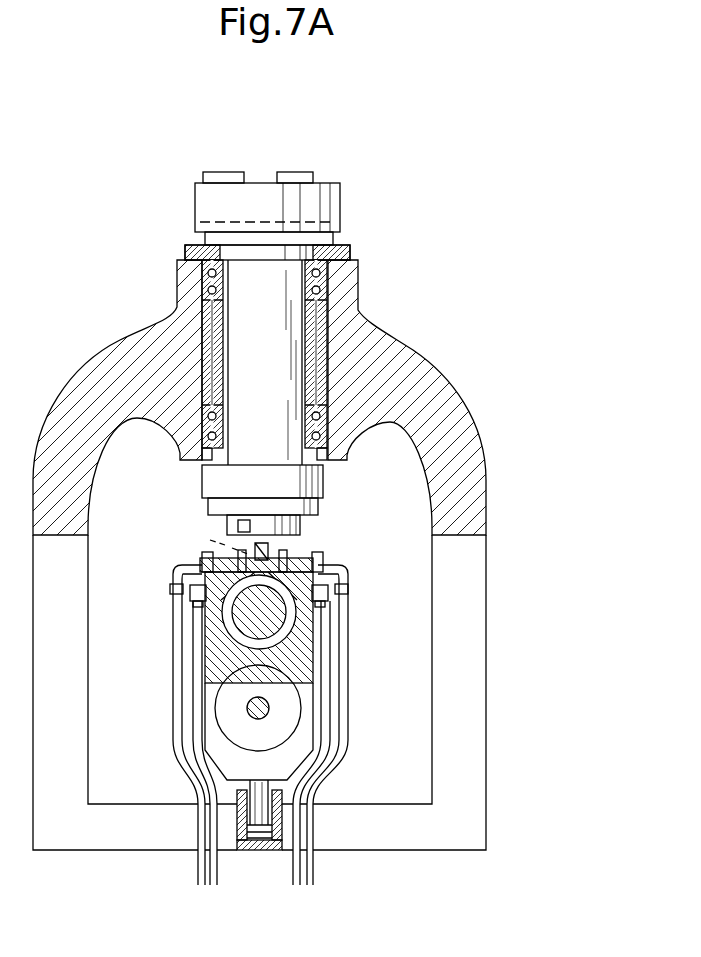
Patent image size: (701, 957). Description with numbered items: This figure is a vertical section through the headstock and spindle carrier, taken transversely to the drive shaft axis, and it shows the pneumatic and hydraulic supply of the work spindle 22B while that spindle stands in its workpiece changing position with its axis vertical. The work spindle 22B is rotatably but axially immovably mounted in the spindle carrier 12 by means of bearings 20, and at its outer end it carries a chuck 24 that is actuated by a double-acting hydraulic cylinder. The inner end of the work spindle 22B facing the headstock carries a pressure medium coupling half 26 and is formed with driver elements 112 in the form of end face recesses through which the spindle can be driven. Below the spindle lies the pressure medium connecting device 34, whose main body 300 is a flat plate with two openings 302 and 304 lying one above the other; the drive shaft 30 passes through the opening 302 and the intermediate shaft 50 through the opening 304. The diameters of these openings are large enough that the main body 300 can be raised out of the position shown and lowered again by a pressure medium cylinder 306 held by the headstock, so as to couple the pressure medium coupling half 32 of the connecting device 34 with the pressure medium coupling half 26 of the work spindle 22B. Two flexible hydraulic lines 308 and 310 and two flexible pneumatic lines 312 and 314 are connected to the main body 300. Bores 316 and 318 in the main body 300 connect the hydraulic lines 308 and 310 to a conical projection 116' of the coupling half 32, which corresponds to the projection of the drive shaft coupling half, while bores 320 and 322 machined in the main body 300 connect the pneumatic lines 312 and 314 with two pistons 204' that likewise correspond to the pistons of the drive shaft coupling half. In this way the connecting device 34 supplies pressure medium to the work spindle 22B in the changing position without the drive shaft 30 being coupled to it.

The spindle carrier 12 is at (410, 340).
The chuck 24 is at (343, 206).
The bearings 20 is at (325, 292).
The work spindle 22B is at (290, 327).
The conical projection 116' is at (286, 504).
The pressure medium coupling half 26 is at (306, 530).
The pressure medium coupling half 32 is at (281, 547).
The driver elements 112 is at (225, 535).
The pistons 204' is at (262, 548).
The bore 320 is at (203, 562).
The bore 322 is at (325, 560).
The bore 318 is at (190, 592).
The bore 316 is at (336, 588).
The flexible pneumatic line 314 is at (172, 702).
The flexible hydraulic line 310 is at (193, 633).
The flexible pneumatic line 312 is at (347, 683).
The flexible hydraulic line 308 is at (322, 730).
The main body 300 is at (330, 658).
The opening 302 is at (300, 633).
The drive shaft 30 is at (240, 625).
The pressure medium connecting device 34 is at (303, 772).
The opening 304 is at (298, 718).
The intermediate shaft 50 is at (250, 710).
The pressure medium cylinder 306 is at (262, 855).